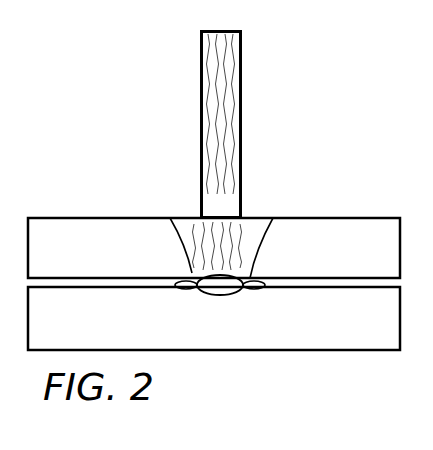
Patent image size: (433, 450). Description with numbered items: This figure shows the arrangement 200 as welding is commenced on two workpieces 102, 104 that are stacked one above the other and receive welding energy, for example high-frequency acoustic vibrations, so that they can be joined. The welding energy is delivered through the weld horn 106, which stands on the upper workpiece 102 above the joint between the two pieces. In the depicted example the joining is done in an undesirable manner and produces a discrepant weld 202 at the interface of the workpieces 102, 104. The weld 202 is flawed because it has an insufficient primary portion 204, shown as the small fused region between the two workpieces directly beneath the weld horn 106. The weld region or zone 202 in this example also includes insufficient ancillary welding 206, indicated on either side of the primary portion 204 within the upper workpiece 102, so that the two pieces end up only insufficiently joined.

The workpiece 102 is at (385, 268).
The workpiece 104 is at (385, 338).
The weld horn 106 is at (200, 65).
The weld joint assembly 200 is at (293, 57).
The discrepant weld 202 is at (243, 308).
The primary portion 204 is at (207, 294).
The ancillary welding 206 is at (170, 218).